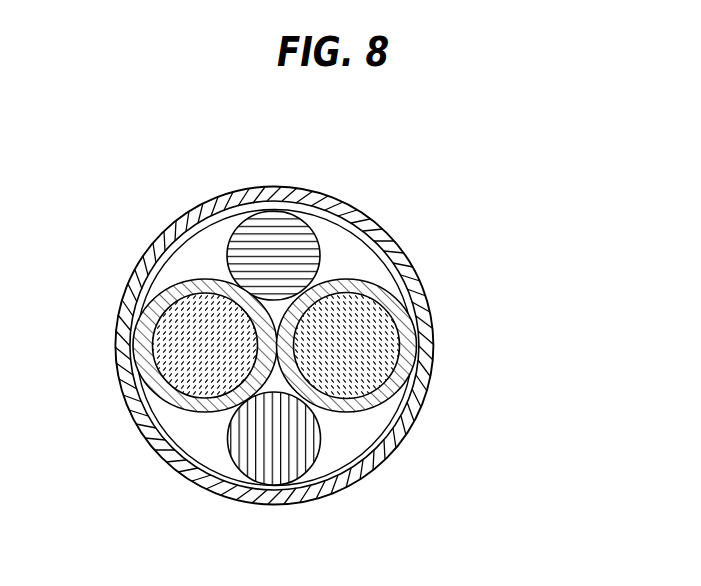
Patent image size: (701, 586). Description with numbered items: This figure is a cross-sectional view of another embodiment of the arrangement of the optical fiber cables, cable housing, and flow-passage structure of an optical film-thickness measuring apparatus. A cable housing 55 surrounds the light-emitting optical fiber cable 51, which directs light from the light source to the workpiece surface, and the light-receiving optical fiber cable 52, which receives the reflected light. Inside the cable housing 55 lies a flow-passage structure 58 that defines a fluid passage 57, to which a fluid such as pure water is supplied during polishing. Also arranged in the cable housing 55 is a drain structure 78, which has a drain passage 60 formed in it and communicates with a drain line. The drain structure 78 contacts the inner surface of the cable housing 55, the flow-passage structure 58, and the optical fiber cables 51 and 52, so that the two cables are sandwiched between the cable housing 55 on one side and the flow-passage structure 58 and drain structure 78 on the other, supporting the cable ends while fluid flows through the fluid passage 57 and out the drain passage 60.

The cable housing 55 is at (155, 237).
The drain structure 78 is at (388, 241).
The flow-passage structure 58 is at (157, 447).
The light-emitting optical fiber cable 51 is at (265, 232).
The light-receiving optical fiber cable 52 is at (287, 468).
The fluid passage 57 is at (190, 358).
The drain passage 60 is at (332, 358).